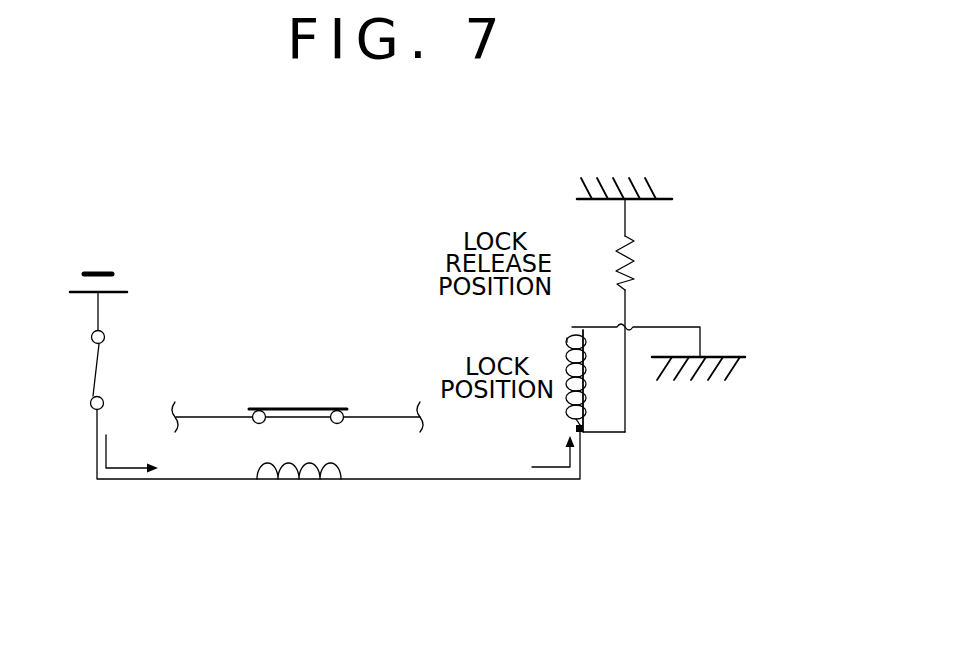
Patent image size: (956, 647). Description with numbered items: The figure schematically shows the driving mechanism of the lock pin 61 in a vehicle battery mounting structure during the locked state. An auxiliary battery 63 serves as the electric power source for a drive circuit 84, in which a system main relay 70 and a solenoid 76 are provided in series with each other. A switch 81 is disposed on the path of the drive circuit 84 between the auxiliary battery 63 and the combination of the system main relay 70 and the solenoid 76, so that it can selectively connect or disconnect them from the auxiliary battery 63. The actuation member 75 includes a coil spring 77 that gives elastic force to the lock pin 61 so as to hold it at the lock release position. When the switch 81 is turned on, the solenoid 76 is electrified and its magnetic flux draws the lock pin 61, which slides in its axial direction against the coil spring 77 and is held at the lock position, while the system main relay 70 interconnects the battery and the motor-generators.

The auxiliary battery 63 is at (83, 292).
The switch 81 is at (93, 366).
The drive circuit 84 is at (175, 480).
The system main relay 70 is at (297, 398).
The lock pin 61 is at (567, 340).
The actuation member 75 is at (658, 362).
The solenoid 76 is at (585, 393).
The coil spring 77 is at (633, 272).